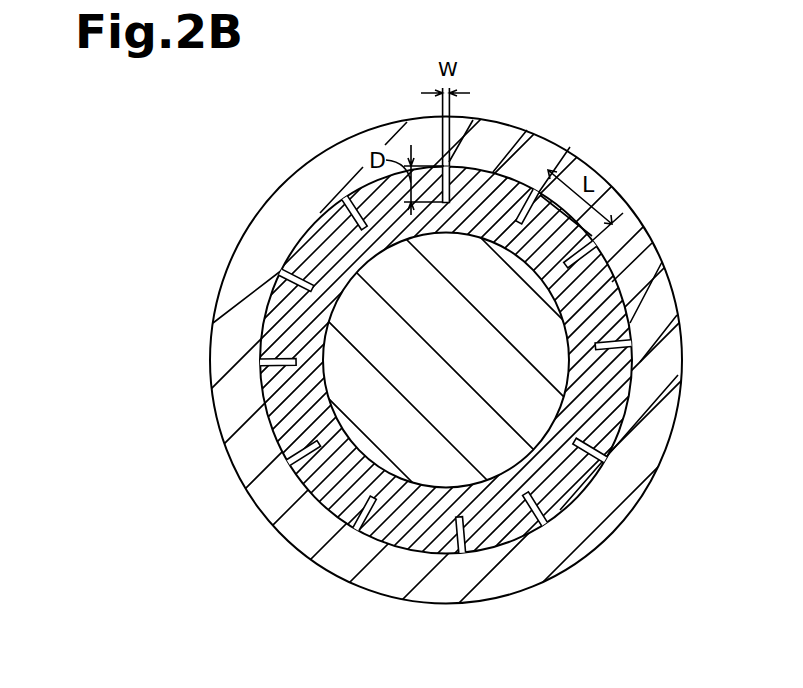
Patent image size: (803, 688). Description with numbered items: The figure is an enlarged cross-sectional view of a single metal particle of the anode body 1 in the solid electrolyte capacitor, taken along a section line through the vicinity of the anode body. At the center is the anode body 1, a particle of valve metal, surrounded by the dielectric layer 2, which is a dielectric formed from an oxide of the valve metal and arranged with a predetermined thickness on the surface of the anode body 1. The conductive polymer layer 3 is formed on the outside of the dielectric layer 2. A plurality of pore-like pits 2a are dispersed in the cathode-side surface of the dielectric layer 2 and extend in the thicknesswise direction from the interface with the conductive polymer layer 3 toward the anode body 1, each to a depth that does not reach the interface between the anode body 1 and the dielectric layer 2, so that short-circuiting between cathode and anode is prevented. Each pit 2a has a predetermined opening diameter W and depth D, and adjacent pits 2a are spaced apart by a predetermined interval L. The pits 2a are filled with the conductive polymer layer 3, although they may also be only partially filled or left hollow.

The anode body 1 is at (530, 322).
The dielectric layer 2 is at (285, 317).
The pits 2a is at (290, 446).
The conductive polymer layer 3 is at (650, 437).